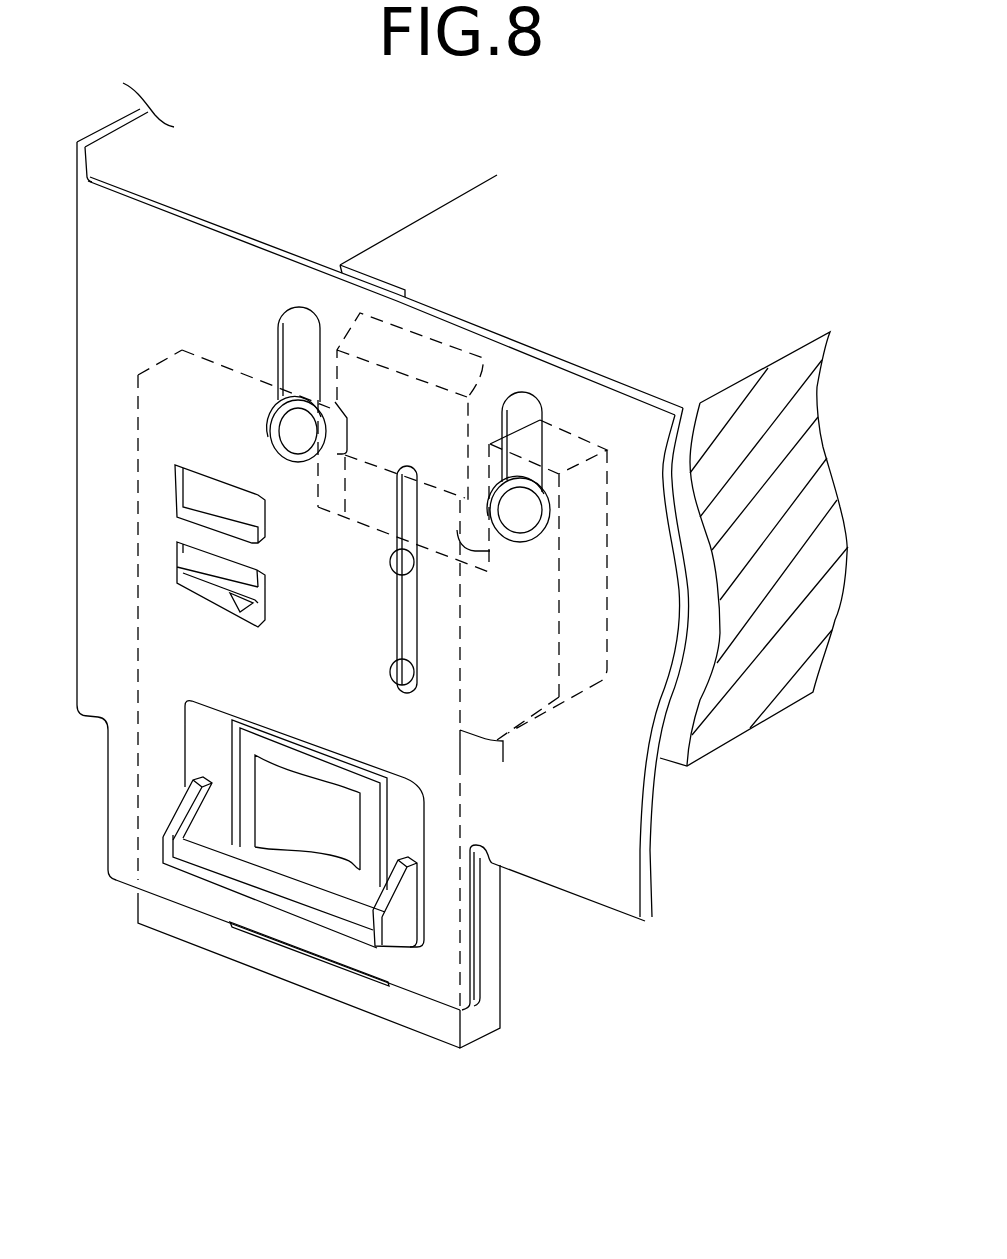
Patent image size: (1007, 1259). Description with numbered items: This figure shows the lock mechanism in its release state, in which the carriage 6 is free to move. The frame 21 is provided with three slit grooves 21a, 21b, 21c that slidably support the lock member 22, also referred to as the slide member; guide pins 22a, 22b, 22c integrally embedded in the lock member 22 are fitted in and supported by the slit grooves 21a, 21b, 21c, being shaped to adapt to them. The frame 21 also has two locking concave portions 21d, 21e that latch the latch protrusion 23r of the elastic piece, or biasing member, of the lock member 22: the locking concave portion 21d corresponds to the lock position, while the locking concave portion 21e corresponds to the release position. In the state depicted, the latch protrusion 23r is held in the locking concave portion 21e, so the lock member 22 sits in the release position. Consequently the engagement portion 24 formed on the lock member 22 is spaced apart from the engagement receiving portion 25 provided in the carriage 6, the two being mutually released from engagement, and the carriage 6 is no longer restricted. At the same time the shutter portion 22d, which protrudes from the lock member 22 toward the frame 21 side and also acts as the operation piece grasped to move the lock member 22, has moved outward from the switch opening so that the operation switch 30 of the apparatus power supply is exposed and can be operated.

The carriage 6 is at (455, 215).
The frame 21 is at (605, 880).
The slit groove 21a is at (290, 337).
The slit groove 21b is at (522, 408).
The slit groove 21c is at (414, 624).
The locking concave portion 21d is at (220, 487).
The locking concave portion 21e is at (210, 602).
The lock member 22 is at (480, 1023).
The guide pin 22a is at (293, 430).
The guide pin 22b is at (523, 517).
The guide pin 22c is at (395, 562).
The shutter portion 22d is at (187, 871).
The latch protrusion 23r is at (262, 608).
The engagement portion 24 is at (490, 551).
The engagement receiving portion 25 is at (427, 390).
The operation switch 30 is at (342, 857).